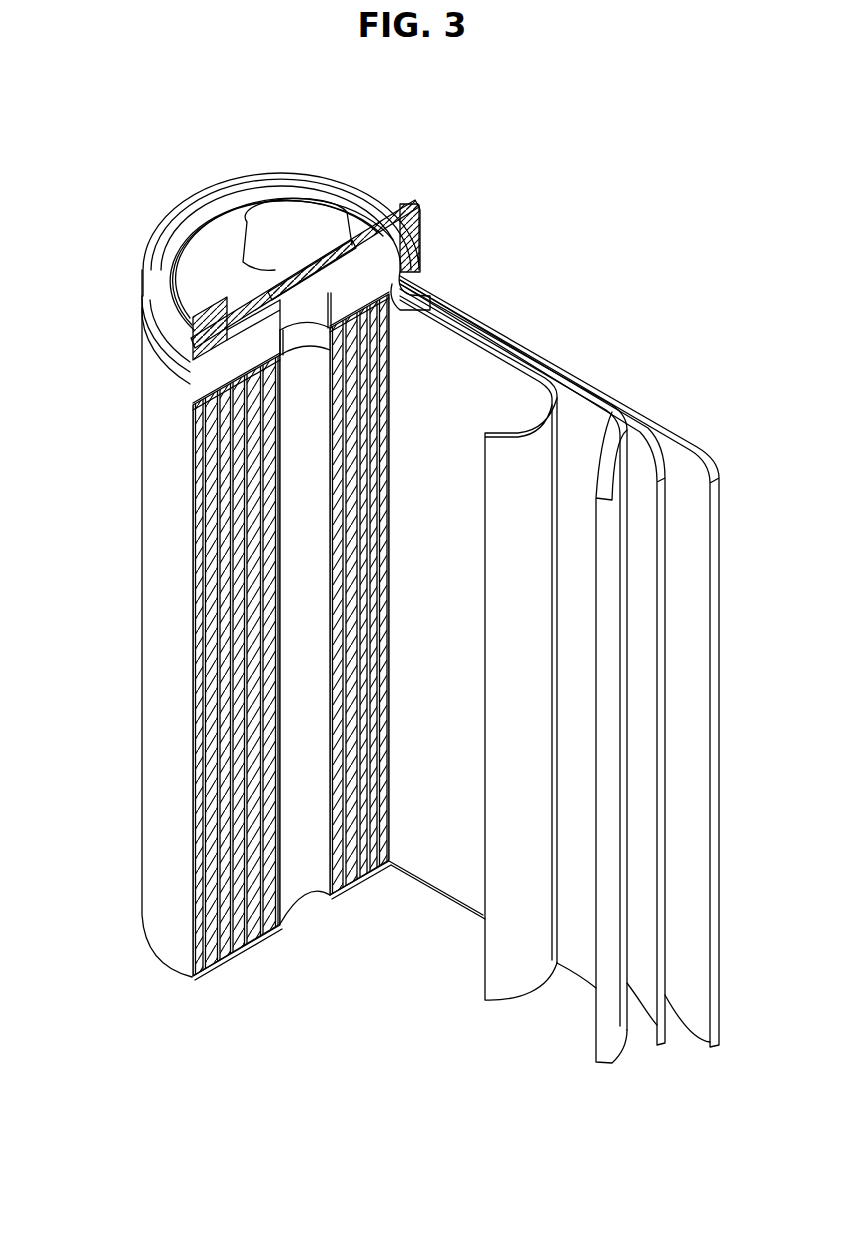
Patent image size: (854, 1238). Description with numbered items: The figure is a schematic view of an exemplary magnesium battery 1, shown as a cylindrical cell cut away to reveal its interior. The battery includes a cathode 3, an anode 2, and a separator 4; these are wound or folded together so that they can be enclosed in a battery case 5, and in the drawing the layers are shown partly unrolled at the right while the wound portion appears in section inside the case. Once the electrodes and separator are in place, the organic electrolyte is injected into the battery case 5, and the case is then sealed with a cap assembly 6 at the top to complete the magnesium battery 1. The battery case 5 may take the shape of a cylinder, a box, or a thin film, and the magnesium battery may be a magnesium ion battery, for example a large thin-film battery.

The magnesium battery 1 is at (577, 197).
The anode 2 is at (693, 448).
The cathode 3 is at (613, 442).
The separator 4 is at (522, 437).
The battery case 5 is at (150, 624).
The cap assembly 6 is at (274, 222).